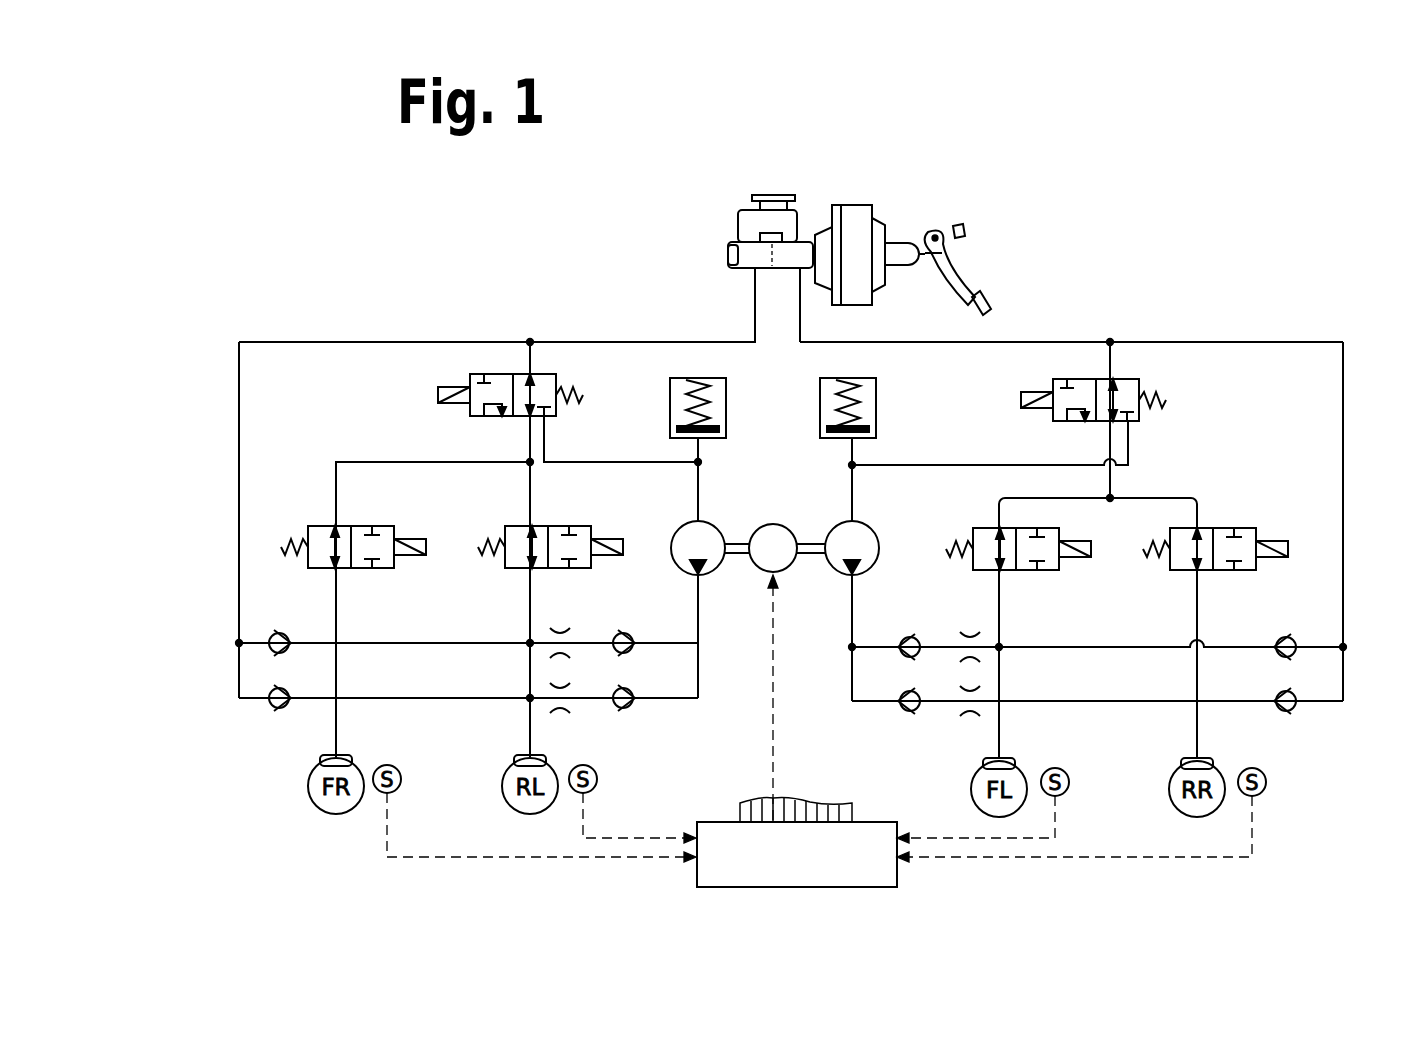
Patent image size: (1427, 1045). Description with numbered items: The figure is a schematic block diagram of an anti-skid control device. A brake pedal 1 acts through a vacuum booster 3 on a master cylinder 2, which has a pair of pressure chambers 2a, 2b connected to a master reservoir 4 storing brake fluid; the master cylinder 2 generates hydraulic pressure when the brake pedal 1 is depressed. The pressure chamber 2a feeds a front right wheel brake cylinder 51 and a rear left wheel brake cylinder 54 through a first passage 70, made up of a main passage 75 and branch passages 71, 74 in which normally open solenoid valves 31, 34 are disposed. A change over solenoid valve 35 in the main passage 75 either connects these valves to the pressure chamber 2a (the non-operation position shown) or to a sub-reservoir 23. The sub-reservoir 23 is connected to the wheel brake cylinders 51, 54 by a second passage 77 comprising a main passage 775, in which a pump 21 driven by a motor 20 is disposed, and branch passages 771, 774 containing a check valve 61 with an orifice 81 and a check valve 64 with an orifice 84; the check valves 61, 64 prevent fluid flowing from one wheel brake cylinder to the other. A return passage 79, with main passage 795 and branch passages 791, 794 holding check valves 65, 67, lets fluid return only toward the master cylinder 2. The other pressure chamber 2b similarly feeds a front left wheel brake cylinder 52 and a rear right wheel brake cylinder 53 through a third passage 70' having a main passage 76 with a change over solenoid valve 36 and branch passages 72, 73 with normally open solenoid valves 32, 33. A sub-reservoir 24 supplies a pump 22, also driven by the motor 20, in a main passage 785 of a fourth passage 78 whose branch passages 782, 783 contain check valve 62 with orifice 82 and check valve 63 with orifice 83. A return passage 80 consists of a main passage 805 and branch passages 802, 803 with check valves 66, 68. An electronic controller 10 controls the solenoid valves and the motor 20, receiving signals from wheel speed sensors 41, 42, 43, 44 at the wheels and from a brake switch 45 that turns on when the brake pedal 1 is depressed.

The brake pedal 1 is at (970, 285).
The master cylinder 2 is at (795, 252).
The pressure chamber 2a is at (740, 270).
The pressure chamber 2b is at (801, 272).
The vacuum booster 3 is at (860, 212).
The master reservoir 4 is at (733, 214).
The electronic controller 10 is at (887, 822).
The motor 20 is at (786, 526).
The pump 21 is at (712, 526).
The pump 22 is at (870, 528).
The sub-reservoir 23 is at (728, 400).
The sub-reservoir 24 is at (878, 400).
The normally open solenoid valve 31 is at (380, 527).
The normally open solenoid valve 32 is at (1030, 570).
The normally open solenoid valve 33 is at (1212, 528).
The normally open solenoid valve 34 is at (567, 527).
The change over solenoid valve 35 is at (490, 418).
The change over solenoid valve 36 is at (1143, 385).
The wheel speed sensor 41 is at (402, 780).
The wheel speed sensor 42 is at (1070, 787).
The wheel speed sensor 43 is at (1266, 792).
The wheel speed sensor 44 is at (598, 784).
The brake switch 45 is at (966, 230).
The front right wheel brake cylinder 51 is at (352, 756).
The front left wheel brake cylinder 52 is at (1012, 759).
The rear right wheel brake cylinder 53 is at (1210, 759).
The rear left wheel brake cylinder 54 is at (516, 756).
The check valve 61 is at (627, 710).
The check valve 62 is at (915, 636).
The check valve 63 is at (905, 713).
The check valve 64 is at (620, 632).
The check valve 65 is at (282, 711).
The check valve 66 is at (1290, 636).
The check valve 67 is at (288, 653).
The check valve 68 is at (1298, 713).
The first passage 70 is at (500, 508).
The third passage 70' is at (1076, 382).
The branch passage 71 is at (338, 478).
The branch passage 72 is at (1000, 494).
The branch passage 73 is at (1140, 498).
The branch passage 74 is at (532, 480).
The main passage 75 is at (575, 342).
The main passage 76 is at (910, 342).
The second passage 77 is at (704, 478).
The fourth passage 78 is at (846, 486).
The return passage 79 is at (236, 378).
The return passage 80 is at (1348, 378).
The orifice 81 is at (562, 713).
The orifice 82 is at (970, 632).
The orifice 83 is at (968, 716).
The orifice 84 is at (560, 628).
The branch passage 771 is at (368, 696).
The branch passage 774 is at (690, 643).
The main passage 775 is at (732, 636).
The branch passage 782 is at (895, 640).
The branch passage 783 is at (830, 740).
The main passage 785 is at (850, 600).
The branch passage 791 is at (238, 701).
The branch passage 794 is at (262, 638).
The main passage 795 is at (360, 342).
The branch passage 802 is at (1346, 644).
The branch passage 803 is at (1346, 705).
The main passage 805 is at (1238, 342).